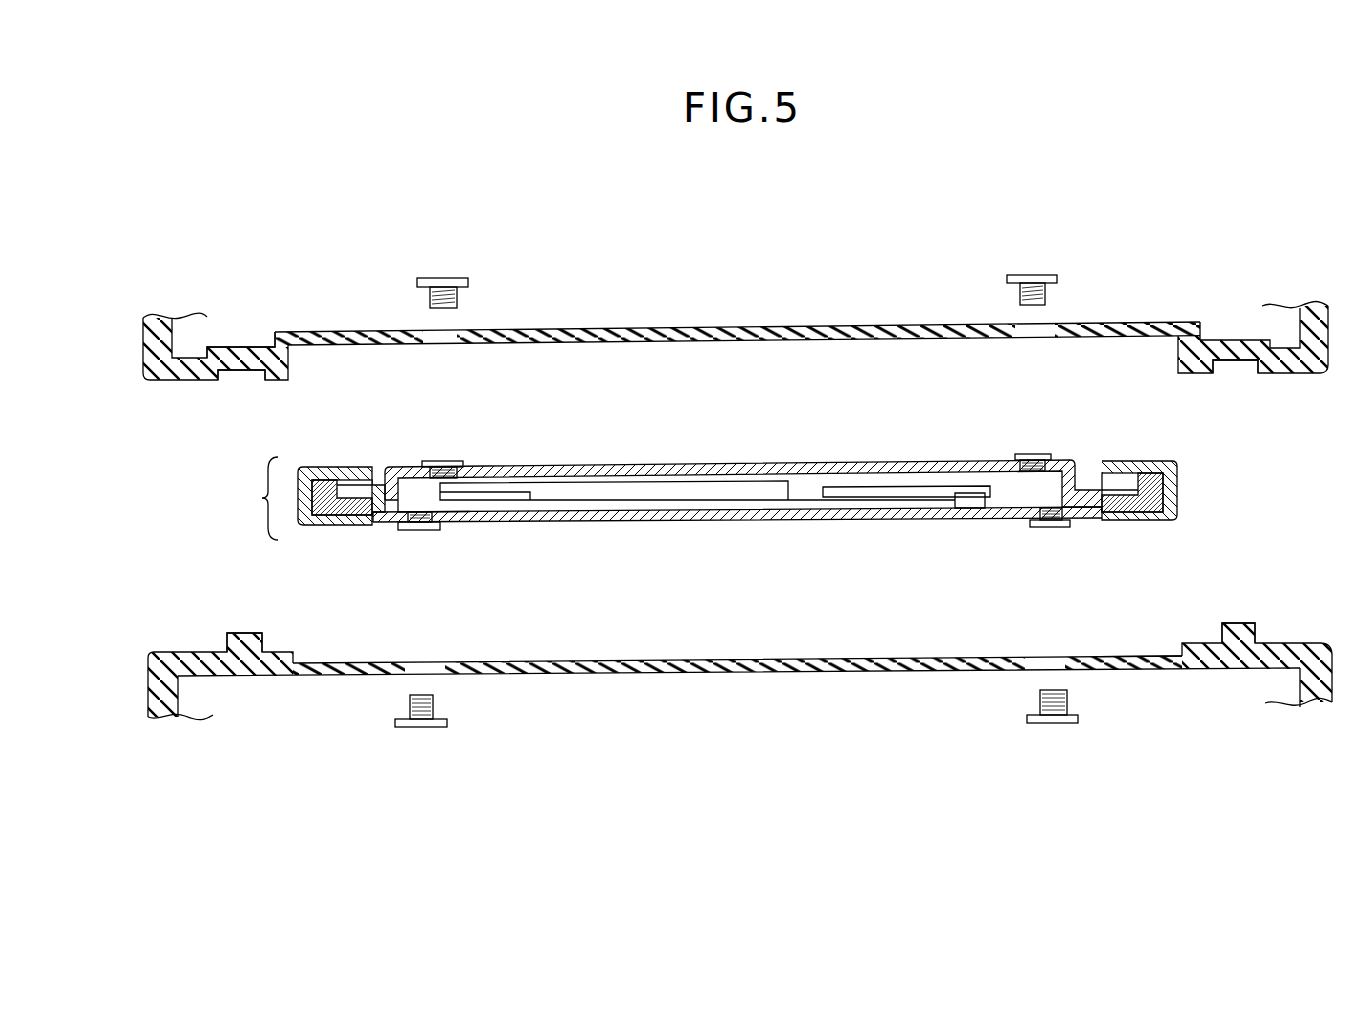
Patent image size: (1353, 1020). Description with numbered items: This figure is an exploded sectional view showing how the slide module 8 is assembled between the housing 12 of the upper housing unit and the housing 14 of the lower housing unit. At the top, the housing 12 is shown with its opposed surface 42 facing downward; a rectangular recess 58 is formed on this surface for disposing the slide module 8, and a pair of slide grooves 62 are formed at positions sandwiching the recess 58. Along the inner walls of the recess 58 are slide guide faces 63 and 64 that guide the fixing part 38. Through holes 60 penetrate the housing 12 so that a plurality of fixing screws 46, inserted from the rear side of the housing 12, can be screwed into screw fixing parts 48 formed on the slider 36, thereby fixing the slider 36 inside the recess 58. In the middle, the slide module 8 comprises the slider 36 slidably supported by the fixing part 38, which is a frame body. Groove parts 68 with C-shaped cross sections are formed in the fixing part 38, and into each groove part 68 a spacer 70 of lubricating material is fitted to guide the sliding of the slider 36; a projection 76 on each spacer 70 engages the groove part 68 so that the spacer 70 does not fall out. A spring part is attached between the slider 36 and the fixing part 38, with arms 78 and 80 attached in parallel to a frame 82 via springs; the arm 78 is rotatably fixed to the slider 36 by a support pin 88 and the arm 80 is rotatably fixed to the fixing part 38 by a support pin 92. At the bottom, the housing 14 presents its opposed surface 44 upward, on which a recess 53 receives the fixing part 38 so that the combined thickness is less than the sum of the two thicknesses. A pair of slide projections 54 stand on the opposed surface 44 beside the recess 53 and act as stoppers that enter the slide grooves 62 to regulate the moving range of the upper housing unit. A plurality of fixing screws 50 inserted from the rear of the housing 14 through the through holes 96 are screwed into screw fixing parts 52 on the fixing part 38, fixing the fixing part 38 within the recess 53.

The slide module 8 is at (267, 497).
The housing 12 is at (140, 336).
The housing 14 is at (148, 678).
The slider 36 is at (643, 463).
The fixing part 38 is at (643, 523).
The opposed surface 42 is at (788, 340).
The opposed surface 44 is at (696, 681).
The fixing screw 46 is at (442, 279).
The screw fixing part 48 is at (445, 462).
The fixing screw 50 is at (420, 727).
The screw fixing part 52 is at (422, 530).
The recess 53 is at (1130, 655).
The slide projection 54 is at (227, 640).
The recess 58 is at (737, 329).
The through hole 60 is at (457, 332).
The slide groove 62 is at (222, 376).
The slide guide face 63 is at (290, 340).
The slide guide face 64 is at (1168, 336).
The groove part 68 is at (340, 467).
The spacer 70 is at (305, 525).
The projection 76 is at (350, 525).
The arm 78 is at (447, 523).
The arm 80 is at (972, 508).
The frame 82 is at (725, 500).
The support pin 88 is at (490, 500).
The support pin 92 is at (930, 487).
The through hole 96 is at (440, 676).